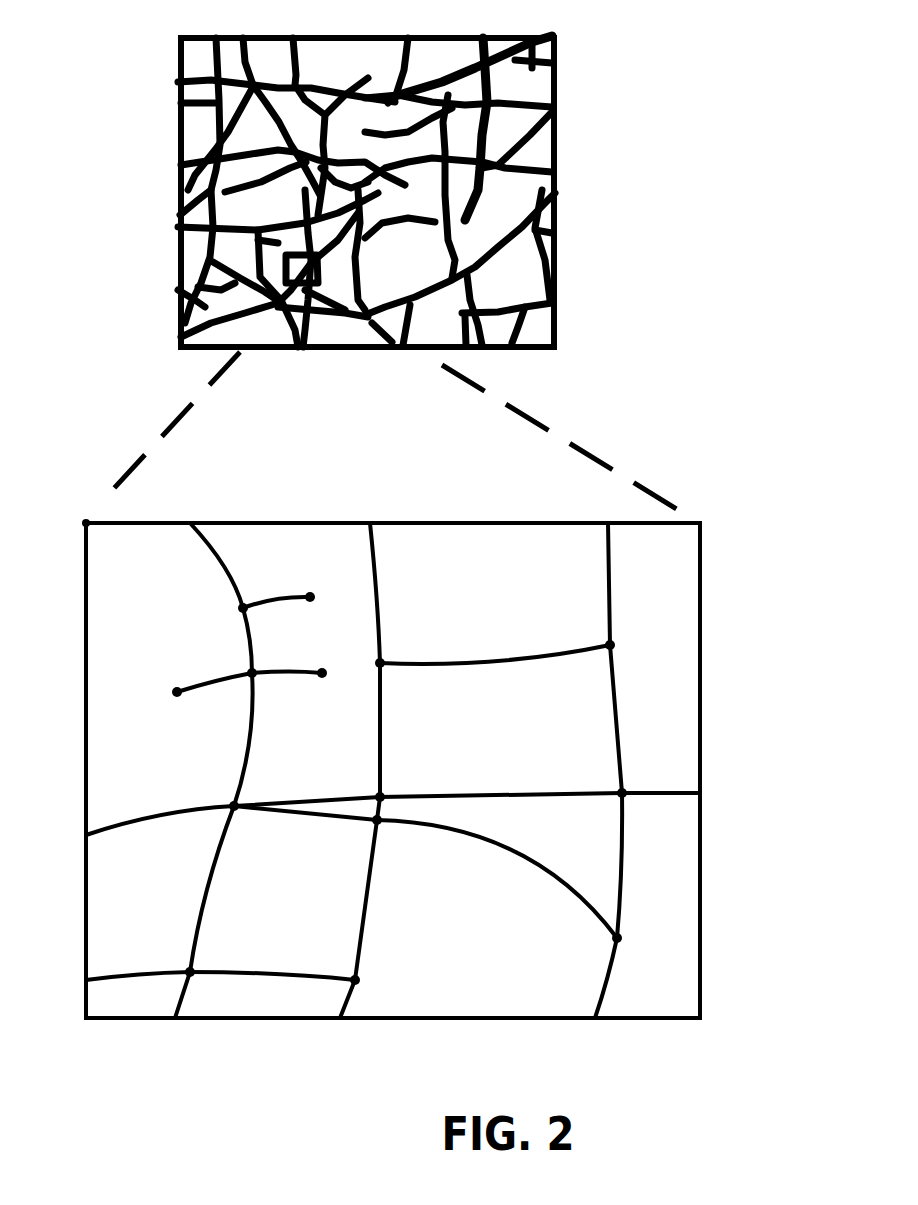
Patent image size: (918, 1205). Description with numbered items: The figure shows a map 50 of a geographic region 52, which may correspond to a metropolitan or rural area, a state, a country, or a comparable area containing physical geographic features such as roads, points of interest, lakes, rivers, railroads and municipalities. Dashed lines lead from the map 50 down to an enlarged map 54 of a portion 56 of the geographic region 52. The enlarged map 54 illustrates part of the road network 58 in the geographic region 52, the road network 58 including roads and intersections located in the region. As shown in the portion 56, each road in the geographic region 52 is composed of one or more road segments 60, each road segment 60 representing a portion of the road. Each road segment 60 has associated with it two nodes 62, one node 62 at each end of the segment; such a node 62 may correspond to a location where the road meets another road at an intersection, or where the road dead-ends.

The map 50 is at (106, 178).
The geographic region 52 is at (451, 70).
The enlarged map 54 is at (712, 618).
The portion 56 is at (388, 770).
The road network 58 is at (176, 832).
The road segment 60 is at (222, 708).
The node 62 is at (179, 673).